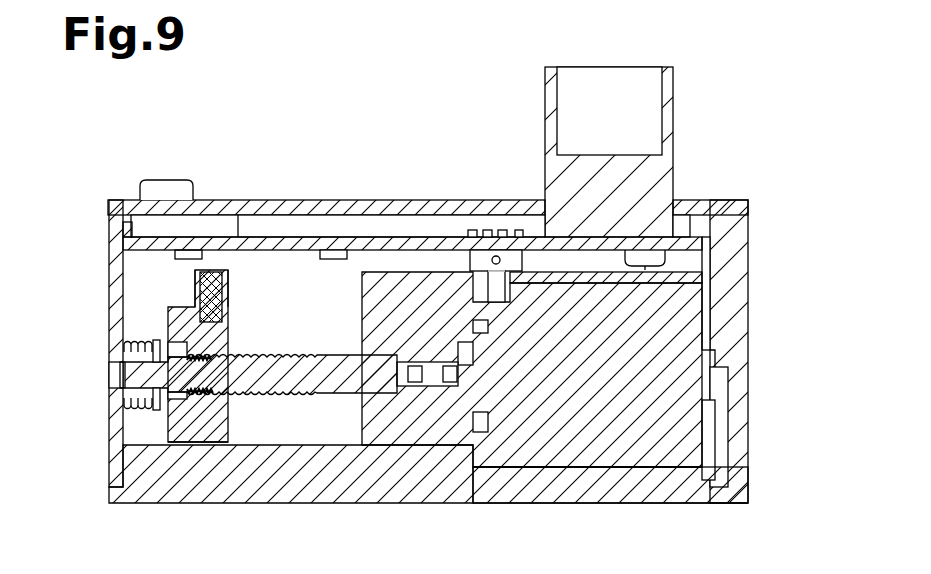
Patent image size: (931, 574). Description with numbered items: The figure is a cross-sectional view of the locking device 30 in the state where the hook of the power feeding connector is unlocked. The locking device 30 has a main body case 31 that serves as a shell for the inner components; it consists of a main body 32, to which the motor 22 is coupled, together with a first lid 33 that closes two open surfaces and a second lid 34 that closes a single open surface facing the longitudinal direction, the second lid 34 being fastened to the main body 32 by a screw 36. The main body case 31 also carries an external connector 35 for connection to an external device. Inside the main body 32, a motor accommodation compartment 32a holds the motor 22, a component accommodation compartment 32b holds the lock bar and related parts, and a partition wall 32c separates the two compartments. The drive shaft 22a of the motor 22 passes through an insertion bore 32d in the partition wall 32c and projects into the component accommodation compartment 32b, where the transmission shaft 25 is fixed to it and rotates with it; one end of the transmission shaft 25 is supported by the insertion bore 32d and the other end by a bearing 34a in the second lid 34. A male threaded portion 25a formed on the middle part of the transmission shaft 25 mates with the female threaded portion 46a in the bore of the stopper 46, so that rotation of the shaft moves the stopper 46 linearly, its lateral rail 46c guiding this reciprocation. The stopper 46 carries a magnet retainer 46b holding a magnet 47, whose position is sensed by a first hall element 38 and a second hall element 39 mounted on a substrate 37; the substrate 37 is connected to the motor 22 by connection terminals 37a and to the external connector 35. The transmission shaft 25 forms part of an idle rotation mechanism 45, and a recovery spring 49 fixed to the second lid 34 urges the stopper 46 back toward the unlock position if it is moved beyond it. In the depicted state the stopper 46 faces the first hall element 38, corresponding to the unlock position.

The motor 22 is at (603, 470).
The drive shaft 22a is at (428, 392).
The transmission shaft 25 is at (329, 357).
The male threaded portion 25a is at (262, 355).
The locking device 30 is at (768, 233).
The main body case 31 is at (653, 504).
The main body 32 is at (515, 504).
The motor accommodation compartment 32a is at (637, 466).
The component accommodation compartment 32b is at (298, 446).
The partition wall 32c is at (476, 447).
The insertion bore 32d is at (438, 361).
The first lid 33 is at (748, 432).
The second lid 34 is at (112, 457).
The bearing 34a is at (120, 375).
The external connector 35 is at (673, 116).
The screw 36 is at (166, 181).
The substrate 37 is at (125, 270).
The connection terminals 37a is at (467, 258).
The first hall element 38 is at (180, 259).
The second hall element 39 is at (333, 259).
The idle rotation mechanism 45 is at (303, 423).
The stopper 46 is at (228, 437).
The female threaded portion 46a is at (250, 395).
The magnet retainer 46b is at (230, 292).
The lateral rail 46c is at (166, 432).
The magnet 47 is at (210, 272).
The recovery spring 49 is at (136, 403).